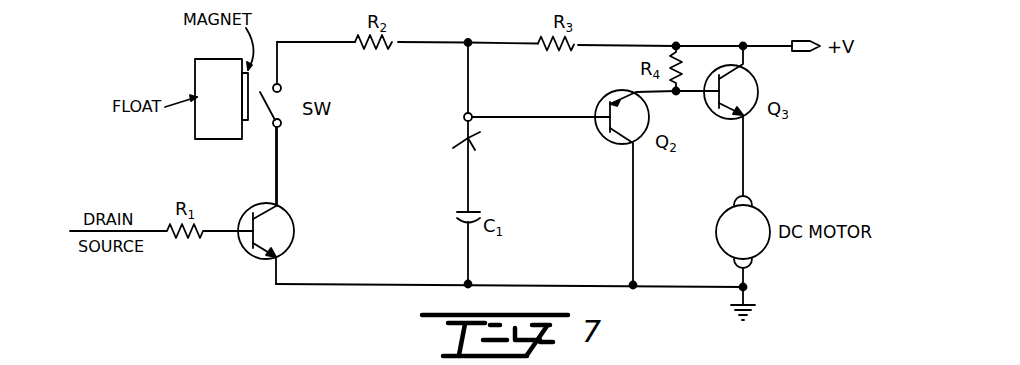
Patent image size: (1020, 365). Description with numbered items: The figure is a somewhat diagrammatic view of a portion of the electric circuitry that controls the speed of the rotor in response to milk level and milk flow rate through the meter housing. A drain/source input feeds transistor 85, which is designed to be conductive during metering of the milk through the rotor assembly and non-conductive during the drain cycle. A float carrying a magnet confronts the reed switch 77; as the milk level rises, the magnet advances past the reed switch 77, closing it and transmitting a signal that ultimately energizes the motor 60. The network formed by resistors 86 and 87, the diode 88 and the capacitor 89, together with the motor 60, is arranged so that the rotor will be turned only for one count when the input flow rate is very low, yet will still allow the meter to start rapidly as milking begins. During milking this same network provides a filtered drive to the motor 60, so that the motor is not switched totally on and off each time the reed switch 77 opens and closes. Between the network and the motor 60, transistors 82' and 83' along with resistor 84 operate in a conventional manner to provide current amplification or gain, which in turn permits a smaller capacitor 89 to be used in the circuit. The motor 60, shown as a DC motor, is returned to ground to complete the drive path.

The motor 60 is at (770, 212).
The reed switch element 77 is at (275, 102).
The transistor 82' is at (627, 187).
The transistor 83' is at (759, 121).
The resistor 84 is at (748, 34).
The transistor 85 is at (294, 226).
The resistor 86 is at (382, 48).
The resistor 87 is at (558, 50).
The diode 88 is at (476, 150).
The capacitor 89 is at (480, 210).